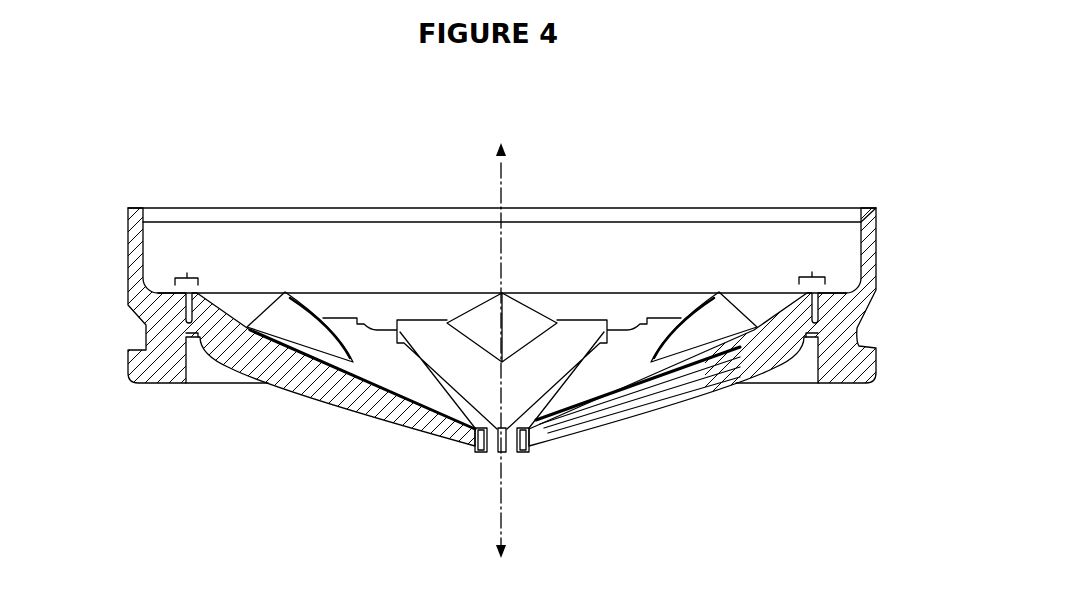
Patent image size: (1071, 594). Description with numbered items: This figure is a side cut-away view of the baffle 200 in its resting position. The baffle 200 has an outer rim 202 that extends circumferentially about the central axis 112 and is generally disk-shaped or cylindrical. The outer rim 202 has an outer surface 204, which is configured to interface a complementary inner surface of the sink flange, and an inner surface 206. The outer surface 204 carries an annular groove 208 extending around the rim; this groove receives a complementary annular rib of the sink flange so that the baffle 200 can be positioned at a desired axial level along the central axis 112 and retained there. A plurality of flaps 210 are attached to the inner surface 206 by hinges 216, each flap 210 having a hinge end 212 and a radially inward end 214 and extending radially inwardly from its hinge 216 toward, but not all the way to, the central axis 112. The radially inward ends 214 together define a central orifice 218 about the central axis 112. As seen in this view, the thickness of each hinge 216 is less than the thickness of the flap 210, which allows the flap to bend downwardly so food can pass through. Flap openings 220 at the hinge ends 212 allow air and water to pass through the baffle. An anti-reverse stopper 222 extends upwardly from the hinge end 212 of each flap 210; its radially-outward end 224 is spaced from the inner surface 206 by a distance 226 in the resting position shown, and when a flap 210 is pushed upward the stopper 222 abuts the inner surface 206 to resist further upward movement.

The central axis 112 is at (501, 184).
The baffle 200 is at (276, 150).
The outer rim 202 is at (128, 249).
The outer surface 204 is at (878, 243).
The inner surface 206 is at (858, 263).
The annular groove 208 is at (860, 332).
The flaps 210 is at (432, 322).
The hinge end 212 is at (193, 335).
The radially inward end 214 is at (476, 450).
The hinge 216 is at (188, 330).
The central orifice 218 is at (487, 466).
The flap opening 220 is at (397, 326).
The anti-reverse stopper 222 is at (218, 292).
The radially-outward end 224 is at (202, 296).
The distance 226 is at (500, 267).